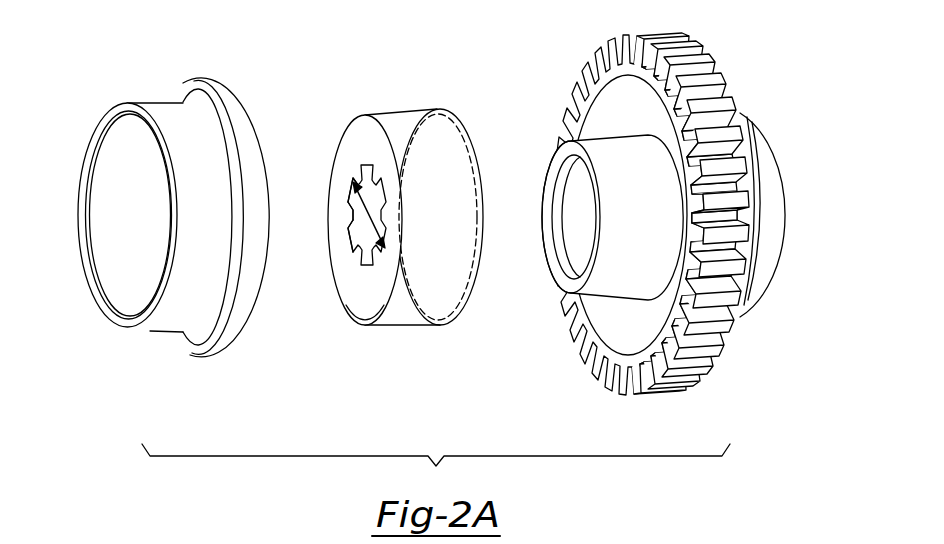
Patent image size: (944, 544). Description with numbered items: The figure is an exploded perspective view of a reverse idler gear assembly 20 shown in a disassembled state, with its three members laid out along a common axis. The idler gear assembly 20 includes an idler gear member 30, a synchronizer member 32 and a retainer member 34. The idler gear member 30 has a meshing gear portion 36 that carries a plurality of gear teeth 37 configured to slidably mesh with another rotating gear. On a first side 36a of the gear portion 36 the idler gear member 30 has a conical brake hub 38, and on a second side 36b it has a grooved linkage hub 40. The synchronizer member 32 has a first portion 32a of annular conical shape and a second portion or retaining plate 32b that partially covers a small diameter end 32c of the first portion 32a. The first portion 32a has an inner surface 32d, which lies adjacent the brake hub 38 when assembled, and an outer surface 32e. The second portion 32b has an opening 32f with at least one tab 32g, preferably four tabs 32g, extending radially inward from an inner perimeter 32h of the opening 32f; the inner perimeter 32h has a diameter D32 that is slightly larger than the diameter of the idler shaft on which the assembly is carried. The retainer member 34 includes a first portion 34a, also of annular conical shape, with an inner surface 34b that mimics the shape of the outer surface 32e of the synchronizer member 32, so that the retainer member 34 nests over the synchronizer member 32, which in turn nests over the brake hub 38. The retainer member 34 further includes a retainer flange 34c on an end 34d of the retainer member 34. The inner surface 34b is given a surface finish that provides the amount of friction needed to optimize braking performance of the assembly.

The idler gear assembly 20 is at (388, 48).
The idler gear member 30 is at (672, 203).
The synchronizer member 32 is at (395, 210).
The first portion 32a is at (420, 108).
The second portion or retaining plate 32b is at (351, 282).
The small diameter end 32c is at (384, 322).
The inner surface 32d is at (375, 170).
The outer surface 32e is at (428, 320).
The opening 32f is at (352, 246).
The tab 32g is at (355, 221).
The inner perimeter 32h is at (351, 190).
The diameter of the inner perimeter D32 is at (405, 223).
The retainer member 34 is at (174, 219).
The first portion 34a is at (151, 104).
The inner surface 34b is at (108, 167).
The retainer flange 34c is at (222, 352).
The end 34d is at (248, 106).
The meshing gear portion 36 is at (620, 70).
The first side 36a is at (640, 338).
The second side 36b is at (760, 243).
The gear teeth 37 is at (725, 345).
The conical brake hub 38 is at (575, 281).
The grooved linkage hub 40 is at (778, 205).